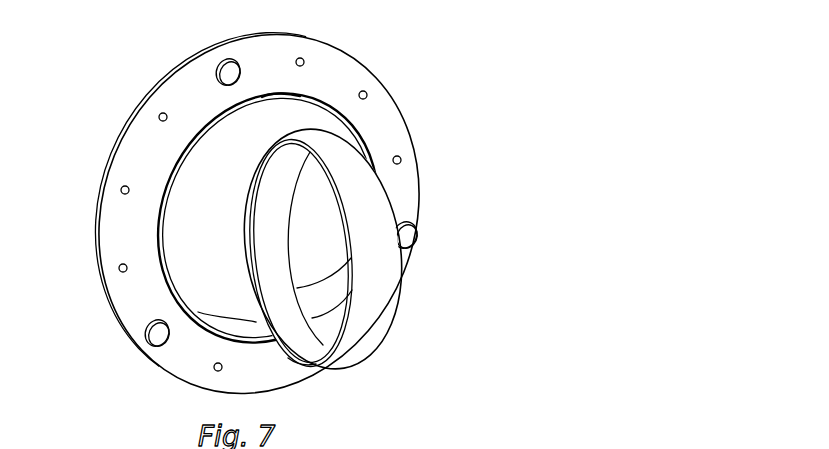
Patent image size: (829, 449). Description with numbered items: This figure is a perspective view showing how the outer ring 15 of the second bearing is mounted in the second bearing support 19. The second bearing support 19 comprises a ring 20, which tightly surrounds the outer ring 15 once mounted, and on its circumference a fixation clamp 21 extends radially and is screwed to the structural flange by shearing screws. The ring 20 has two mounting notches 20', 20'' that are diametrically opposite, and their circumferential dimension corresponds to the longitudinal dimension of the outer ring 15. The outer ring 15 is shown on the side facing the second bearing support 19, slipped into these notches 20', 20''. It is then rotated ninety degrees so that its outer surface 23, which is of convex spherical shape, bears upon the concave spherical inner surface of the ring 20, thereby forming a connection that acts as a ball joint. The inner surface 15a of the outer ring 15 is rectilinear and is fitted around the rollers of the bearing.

The second bearing support 19 is at (410, 81).
The fixation clamp 21 is at (116, 236).
The ring 20 is at (240, 218).
The mounting notch 20' is at (322, 55).
The mounting notch 20'' is at (178, 356).
The outer ring 15 is at (365, 192).
The inner surface 15a is at (297, 347).
The outer surface 23 is at (372, 333).